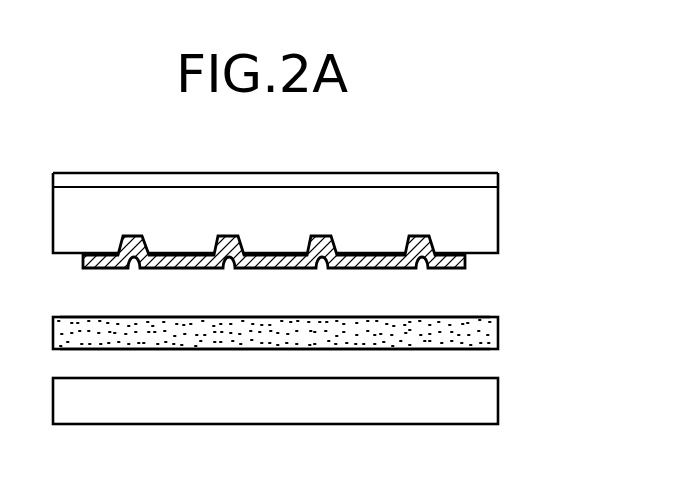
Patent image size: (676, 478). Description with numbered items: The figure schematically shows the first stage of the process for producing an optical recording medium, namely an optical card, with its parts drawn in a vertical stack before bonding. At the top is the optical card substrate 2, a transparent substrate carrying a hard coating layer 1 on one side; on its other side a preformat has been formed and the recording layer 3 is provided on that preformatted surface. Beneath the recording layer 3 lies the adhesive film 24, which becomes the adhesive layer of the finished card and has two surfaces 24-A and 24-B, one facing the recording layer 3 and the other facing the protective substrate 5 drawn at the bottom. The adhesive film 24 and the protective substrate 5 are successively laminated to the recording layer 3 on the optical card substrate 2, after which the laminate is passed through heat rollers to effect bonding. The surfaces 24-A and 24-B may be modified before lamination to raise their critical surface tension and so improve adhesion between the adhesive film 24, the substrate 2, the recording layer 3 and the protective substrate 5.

The hard coating layer 1 is at (470, 181).
The optical card substrate 2 is at (485, 217).
The recording layer 3 is at (465, 257).
The adhesive film 24 is at (498, 333).
The surface of the adhesive film 24-A is at (314, 305).
The surface of the adhesive film 24-B is at (359, 361).
The protective substrate 5 is at (487, 405).